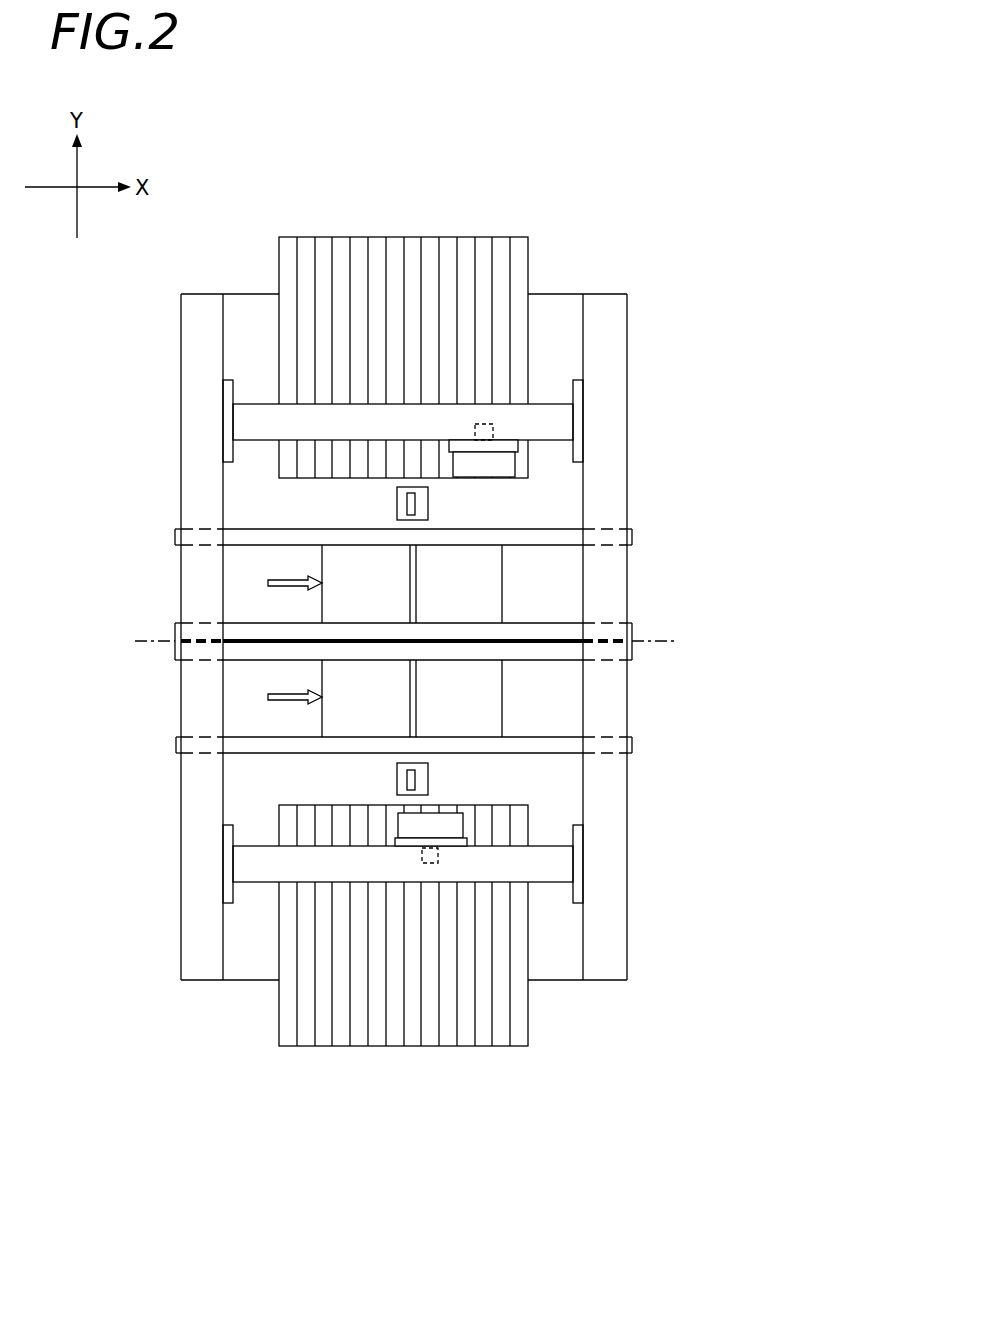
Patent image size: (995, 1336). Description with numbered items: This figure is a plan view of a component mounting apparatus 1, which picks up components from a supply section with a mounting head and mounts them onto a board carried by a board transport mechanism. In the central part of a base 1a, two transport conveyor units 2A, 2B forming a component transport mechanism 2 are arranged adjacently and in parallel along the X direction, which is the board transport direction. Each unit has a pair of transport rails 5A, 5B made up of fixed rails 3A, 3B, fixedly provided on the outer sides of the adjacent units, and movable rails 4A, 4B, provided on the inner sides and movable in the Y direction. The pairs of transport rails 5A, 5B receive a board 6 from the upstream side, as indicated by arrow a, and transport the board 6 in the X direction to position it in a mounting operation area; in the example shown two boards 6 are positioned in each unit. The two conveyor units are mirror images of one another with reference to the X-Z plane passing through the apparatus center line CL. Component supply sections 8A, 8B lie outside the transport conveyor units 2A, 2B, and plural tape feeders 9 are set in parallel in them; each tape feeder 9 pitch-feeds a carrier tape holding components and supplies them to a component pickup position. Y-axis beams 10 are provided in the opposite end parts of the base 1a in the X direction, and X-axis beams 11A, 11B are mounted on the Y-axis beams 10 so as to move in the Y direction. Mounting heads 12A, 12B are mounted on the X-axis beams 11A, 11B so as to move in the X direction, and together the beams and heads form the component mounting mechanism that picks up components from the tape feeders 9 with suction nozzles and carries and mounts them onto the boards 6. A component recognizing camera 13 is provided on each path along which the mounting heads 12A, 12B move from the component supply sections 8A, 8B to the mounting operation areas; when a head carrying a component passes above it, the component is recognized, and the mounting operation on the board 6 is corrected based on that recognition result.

The component mounting apparatus 1 is at (428, 119).
The base 1a is at (262, 310).
The Y-axis beam 10 is at (198, 877).
The component transport mechanism 2 is at (329, 641).
The transport conveyor unit 2A is at (152, 600).
The transport conveyor unit 2B is at (290, 698).
The fixed rail 3A is at (632, 535).
The fixed rail 3B is at (632, 745).
The movable rail 4A is at (632, 633).
The movable rail 4B is at (632, 655).
The pair of transport rails 5A is at (495, 559).
The pair of transport rails 5B is at (498, 713).
The board 6 is at (445, 590).
The component supply section 8A is at (415, 644).
The component supply section 8B is at (517, 1065).
The tape feeder 9 is at (378, 248).
The X-axis beam 11A is at (465, 420).
The X-axis beam 11B is at (540, 867).
The mounting head 12A is at (505, 423).
The mounting head 12B is at (456, 862).
The component recognizing camera 13 is at (422, 502).
The arrow a is at (287, 580).
The apparatus center line CL is at (650, 641).